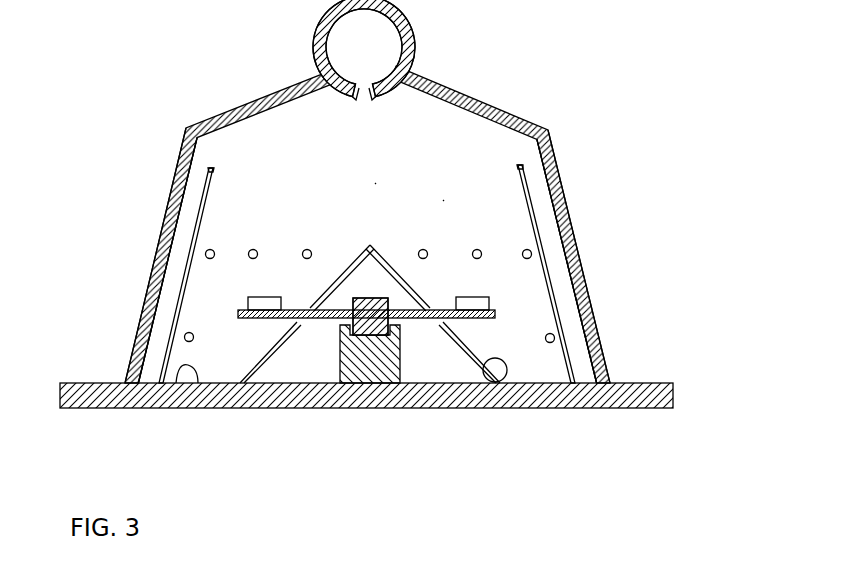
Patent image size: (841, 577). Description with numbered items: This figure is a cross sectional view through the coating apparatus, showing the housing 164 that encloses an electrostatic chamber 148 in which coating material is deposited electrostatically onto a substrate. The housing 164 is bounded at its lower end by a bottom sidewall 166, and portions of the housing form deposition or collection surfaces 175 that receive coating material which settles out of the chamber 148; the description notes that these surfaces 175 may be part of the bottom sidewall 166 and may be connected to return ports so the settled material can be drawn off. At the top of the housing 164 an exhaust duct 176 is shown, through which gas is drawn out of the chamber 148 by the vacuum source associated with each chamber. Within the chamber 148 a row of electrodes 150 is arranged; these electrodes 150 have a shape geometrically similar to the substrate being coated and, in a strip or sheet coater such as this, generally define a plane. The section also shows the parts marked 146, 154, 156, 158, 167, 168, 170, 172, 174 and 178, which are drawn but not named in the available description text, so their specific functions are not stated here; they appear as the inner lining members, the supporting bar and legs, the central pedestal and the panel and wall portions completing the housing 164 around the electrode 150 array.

The chamber interior 146 is at (387, 181).
The electrostatic chamber 148 is at (443, 200).
The electrodes 150 is at (303, 251).
The support bar 154 is at (272, 297).
The mounting block 156 is at (437, 308).
The pedestal 158 is at (328, 383).
The housing 164 is at (387, 253).
The bottom sidewall 166 is at (165, 405).
The side wall 167 is at (166, 211).
The roof panel 168 is at (297, 72).
The support legs 170 is at (353, 260).
The inner strip 172 is at (203, 194).
The inner wall surface 174 is at (198, 182).
The deposition or collection surface 175 is at (138, 370).
The exhaust duct 176 is at (413, 30).
The end lip 178 is at (413, 62).